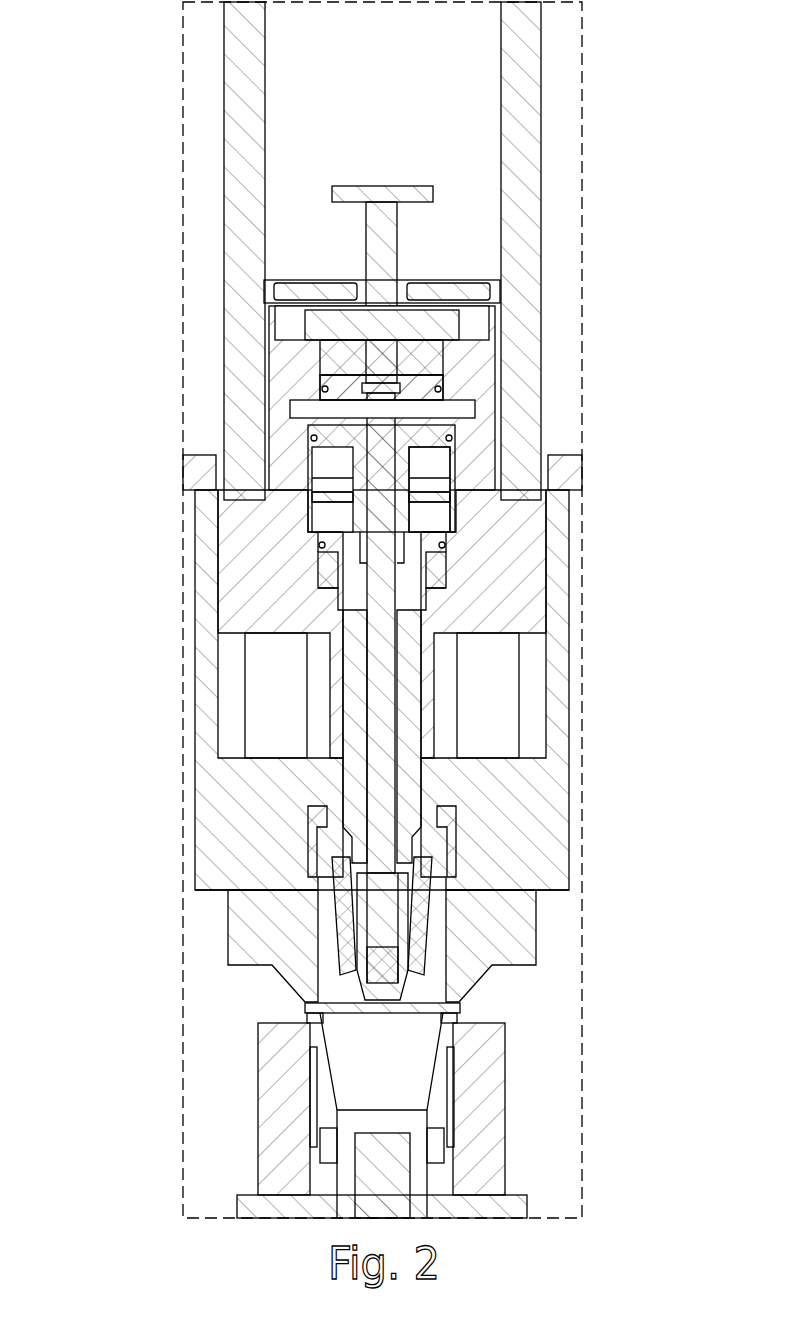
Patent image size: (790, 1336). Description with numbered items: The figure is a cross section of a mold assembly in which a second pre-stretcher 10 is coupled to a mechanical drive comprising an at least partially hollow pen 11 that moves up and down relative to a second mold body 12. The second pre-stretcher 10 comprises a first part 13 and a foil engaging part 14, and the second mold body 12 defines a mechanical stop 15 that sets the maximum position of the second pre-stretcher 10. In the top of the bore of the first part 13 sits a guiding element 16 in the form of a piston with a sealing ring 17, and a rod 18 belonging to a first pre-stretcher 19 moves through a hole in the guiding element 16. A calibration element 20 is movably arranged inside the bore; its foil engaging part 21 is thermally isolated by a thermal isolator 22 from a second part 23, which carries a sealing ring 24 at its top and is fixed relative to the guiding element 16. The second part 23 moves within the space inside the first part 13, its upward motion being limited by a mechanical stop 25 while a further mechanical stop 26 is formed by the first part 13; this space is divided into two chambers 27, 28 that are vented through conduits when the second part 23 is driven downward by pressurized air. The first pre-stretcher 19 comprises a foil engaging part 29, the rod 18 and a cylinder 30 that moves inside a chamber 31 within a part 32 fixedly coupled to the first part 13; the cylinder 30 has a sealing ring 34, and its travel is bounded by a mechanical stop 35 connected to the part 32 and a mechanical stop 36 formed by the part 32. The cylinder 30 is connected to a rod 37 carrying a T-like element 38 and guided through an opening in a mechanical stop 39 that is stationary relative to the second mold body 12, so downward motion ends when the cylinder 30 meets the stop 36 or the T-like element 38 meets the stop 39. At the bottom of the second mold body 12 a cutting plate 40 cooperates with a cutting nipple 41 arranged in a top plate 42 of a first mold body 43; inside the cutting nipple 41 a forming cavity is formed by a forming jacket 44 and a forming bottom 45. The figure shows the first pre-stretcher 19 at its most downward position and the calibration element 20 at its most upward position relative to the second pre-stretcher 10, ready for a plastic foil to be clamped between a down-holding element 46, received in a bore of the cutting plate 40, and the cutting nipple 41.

The second pre-stretcher 10 is at (432, 970).
The pen 11 is at (528, 105).
The second mold body 12 is at (557, 707).
The first part 13 is at (265, 565).
The foil engaging part 14 is at (362, 963).
The mechanical stop 15 is at (533, 753).
The guiding element 16 is at (198, 478).
The sealing ring 17 is at (455, 442).
The rod 18 is at (387, 802).
The first pre-stretcher 19 is at (388, 1008).
The calibration element 20 is at (413, 988).
The foil engaging part 21 is at (343, 922).
The thermal isolator 22 is at (355, 767).
The second part 23 is at (355, 663).
The sealing ring 24 is at (445, 545).
The mechanical stop 25 is at (333, 514).
The further mechanical stop 26 is at (335, 597).
The chamber 27 is at (447, 466).
The chamber 28 is at (437, 575).
The foil engaging part 29 is at (295, 1003).
The cylinder 30 is at (340, 385).
The chamber 31 is at (432, 360).
The part 32 is at (290, 329).
The sealing ring 34 is at (443, 388).
The mechanical stop 35 is at (440, 334).
The mechanical stop 36 is at (327, 405).
The rod 37 is at (378, 258).
The T-like element 38 is at (380, 206).
The mechanical stop 39 is at (470, 291).
The cutting plate 40 is at (508, 918).
The cutting nipple 41 is at (323, 1175).
The top plate 42 is at (293, 1107).
The first mold body 43 is at (510, 1208).
The forming jacket 44 is at (437, 1107).
The forming bottom 45 is at (420, 1170).
The down-holding element 46 is at (443, 857).